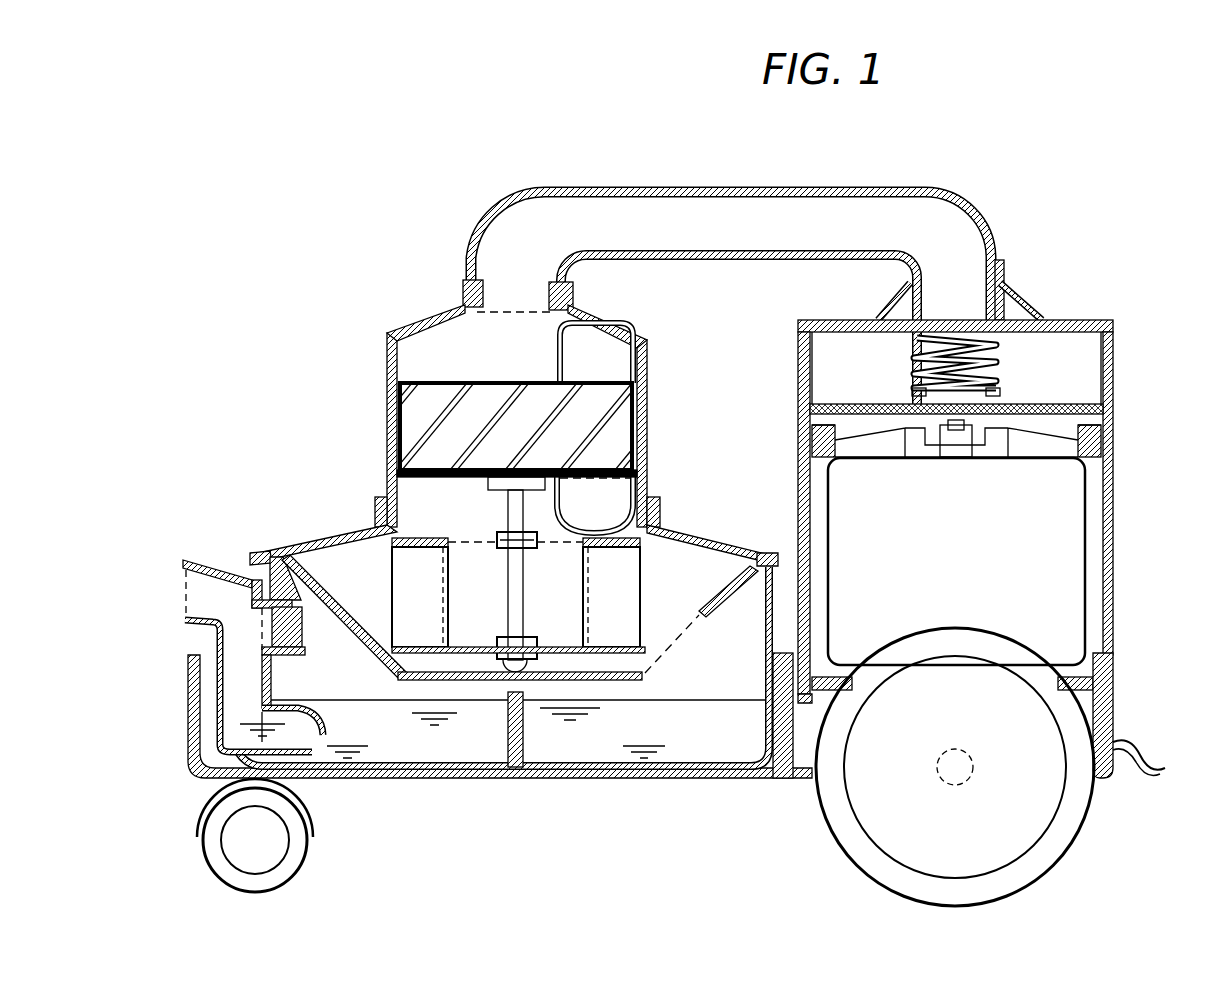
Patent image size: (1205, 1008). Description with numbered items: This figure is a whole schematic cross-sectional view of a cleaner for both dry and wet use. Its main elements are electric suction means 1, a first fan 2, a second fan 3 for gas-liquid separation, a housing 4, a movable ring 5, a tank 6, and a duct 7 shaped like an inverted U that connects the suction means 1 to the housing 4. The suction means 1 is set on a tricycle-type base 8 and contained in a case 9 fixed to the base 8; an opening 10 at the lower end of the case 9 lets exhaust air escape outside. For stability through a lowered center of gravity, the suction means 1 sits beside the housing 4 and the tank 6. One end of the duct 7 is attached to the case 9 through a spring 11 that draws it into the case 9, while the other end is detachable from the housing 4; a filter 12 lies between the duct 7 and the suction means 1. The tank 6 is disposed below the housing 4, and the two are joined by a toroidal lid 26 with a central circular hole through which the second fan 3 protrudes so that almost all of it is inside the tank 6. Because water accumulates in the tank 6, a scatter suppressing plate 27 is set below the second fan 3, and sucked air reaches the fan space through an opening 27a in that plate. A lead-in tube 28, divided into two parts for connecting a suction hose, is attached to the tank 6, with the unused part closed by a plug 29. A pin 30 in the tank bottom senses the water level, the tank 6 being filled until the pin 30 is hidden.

The suction means 1 is at (1055, 562).
The first fan 2 is at (400, 415).
The second fan 3 is at (620, 596).
The housing 4 is at (388, 353).
The movable ring 5 is at (397, 473).
The tank 6 is at (793, 593).
The duct 7 is at (775, 186).
The base 8 is at (779, 782).
The case 9 is at (1113, 332).
The opening 10 is at (1113, 665).
The spring 11 is at (1000, 362).
The filter 12 is at (1103, 409).
The toroidal lid 26 is at (690, 543).
The scatter suppressing plate 27 is at (474, 684).
The opening 27a is at (702, 617).
The lead-in tube 28 is at (185, 627).
The plug 29 is at (306, 623).
The pin 30 is at (524, 730).